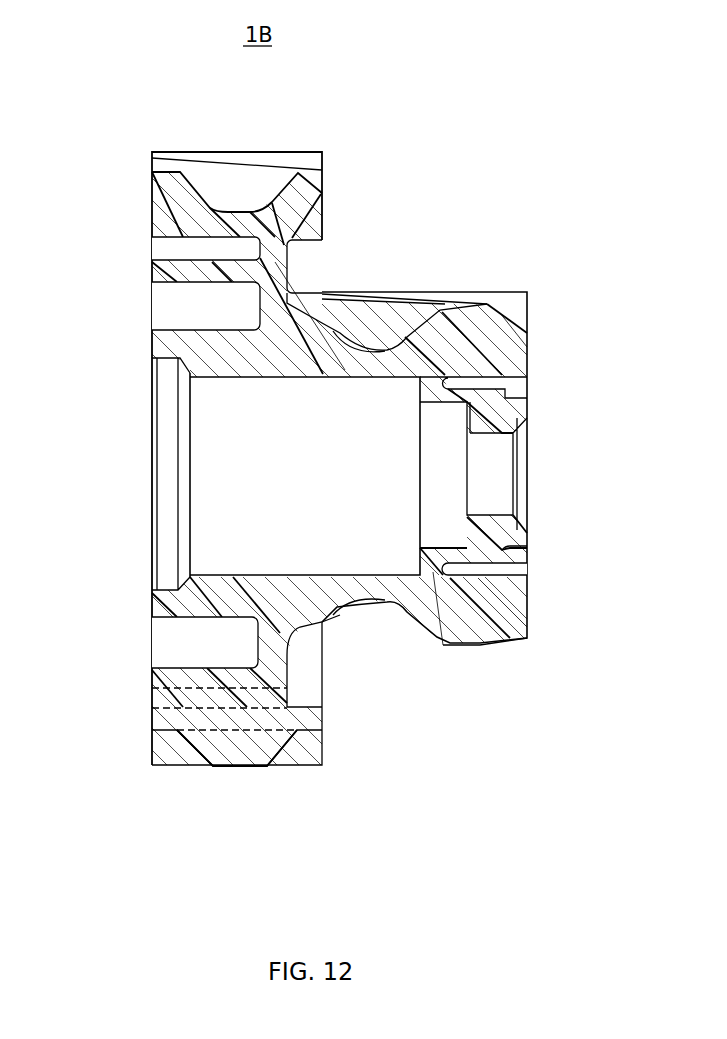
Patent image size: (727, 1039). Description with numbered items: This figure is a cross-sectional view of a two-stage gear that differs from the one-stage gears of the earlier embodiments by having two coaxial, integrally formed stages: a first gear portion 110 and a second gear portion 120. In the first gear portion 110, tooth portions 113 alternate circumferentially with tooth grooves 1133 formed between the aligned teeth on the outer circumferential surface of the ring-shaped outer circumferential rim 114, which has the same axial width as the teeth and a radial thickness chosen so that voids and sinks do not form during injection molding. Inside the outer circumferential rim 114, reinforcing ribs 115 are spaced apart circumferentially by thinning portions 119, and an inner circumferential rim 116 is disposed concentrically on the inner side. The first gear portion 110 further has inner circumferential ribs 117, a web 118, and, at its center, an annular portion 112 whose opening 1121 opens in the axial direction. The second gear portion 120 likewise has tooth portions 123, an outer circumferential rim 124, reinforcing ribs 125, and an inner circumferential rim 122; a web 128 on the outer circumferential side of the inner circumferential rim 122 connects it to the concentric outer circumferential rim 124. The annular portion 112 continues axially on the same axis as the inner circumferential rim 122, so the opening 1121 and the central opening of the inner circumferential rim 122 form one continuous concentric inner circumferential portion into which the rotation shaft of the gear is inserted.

The first gear portion 110 is at (231, 128).
The annular portion 112 is at (168, 346).
The opening 1121 is at (225, 465).
The tooth portion 113 is at (152, 172).
The tooth groove 1133 is at (190, 748).
The outer circumferential rim 114 is at (177, 215).
The reinforcing rib 115 is at (236, 248).
The inner circumferential rim 116 is at (177, 273).
The inner circumferential rib 117 is at (152, 322).
The web 118 is at (258, 314).
The thinning portion 119 is at (168, 247).
The second gear portion 120 is at (440, 268).
The inner circumferential rim 122 is at (508, 538).
The tooth portion 123 is at (477, 632).
The outer circumferential rim 124 is at (507, 590).
The reinforcing rib 125 is at (507, 567).
The web 128 is at (433, 572).